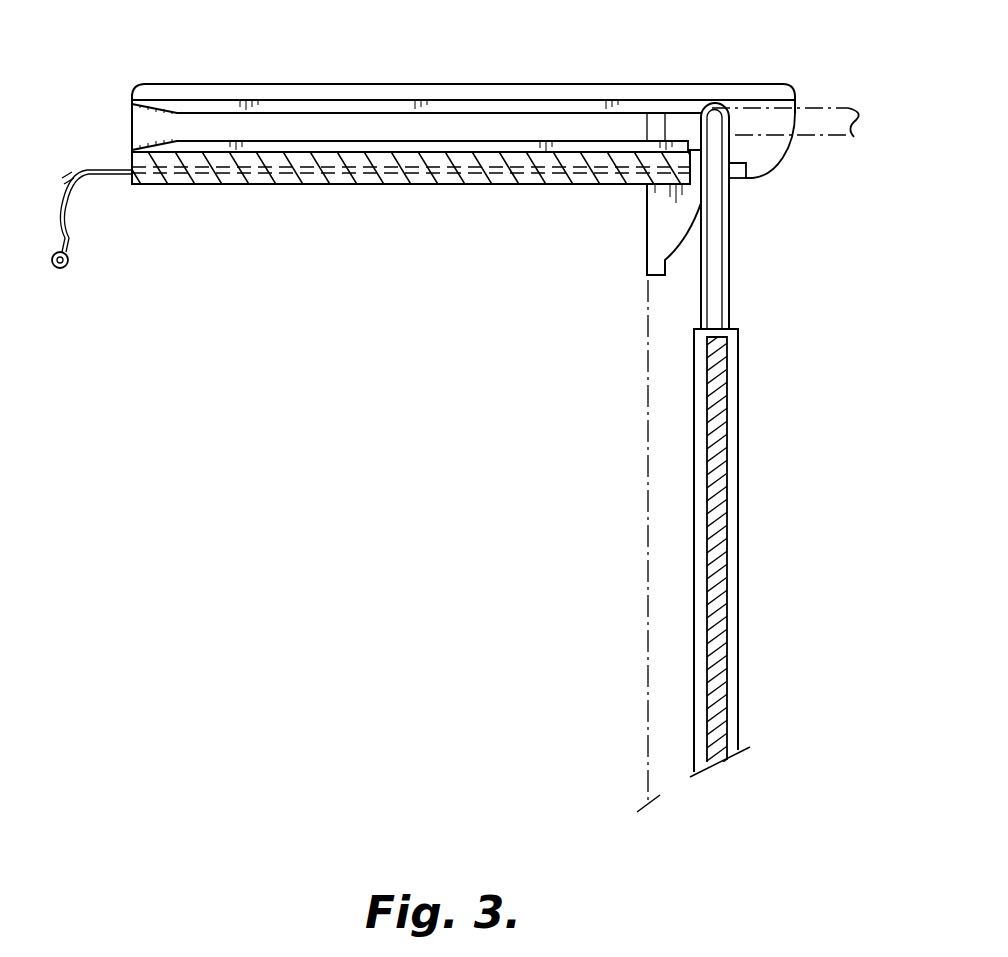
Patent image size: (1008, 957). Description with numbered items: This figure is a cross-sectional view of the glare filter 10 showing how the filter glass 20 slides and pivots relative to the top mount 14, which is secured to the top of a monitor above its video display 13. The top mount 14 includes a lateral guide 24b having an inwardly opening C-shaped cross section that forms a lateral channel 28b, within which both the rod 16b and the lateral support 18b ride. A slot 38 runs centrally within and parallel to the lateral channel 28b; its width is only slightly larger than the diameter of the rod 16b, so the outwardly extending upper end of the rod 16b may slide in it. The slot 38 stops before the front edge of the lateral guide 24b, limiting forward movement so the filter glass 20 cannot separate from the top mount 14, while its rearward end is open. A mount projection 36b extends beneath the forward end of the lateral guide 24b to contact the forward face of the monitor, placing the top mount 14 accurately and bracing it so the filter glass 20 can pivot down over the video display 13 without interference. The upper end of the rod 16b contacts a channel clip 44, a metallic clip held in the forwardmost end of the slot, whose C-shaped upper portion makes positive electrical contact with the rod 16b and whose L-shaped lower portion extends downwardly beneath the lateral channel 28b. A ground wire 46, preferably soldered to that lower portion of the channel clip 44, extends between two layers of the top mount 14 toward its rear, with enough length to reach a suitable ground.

The glare filter 10 is at (382, 430).
The video display 13 is at (648, 543).
The top mount 14 is at (266, 185).
The rod 16b is at (822, 117).
The lateral support 18b is at (740, 473).
The filter glass 20 is at (717, 577).
The lateral guide 24b is at (452, 83).
The lateral channel 28b is at (260, 106).
The mount projection 36b is at (652, 218).
The slots 38 is at (565, 115).
The channel clip 44 is at (727, 102).
The ground wire 46 is at (87, 170).